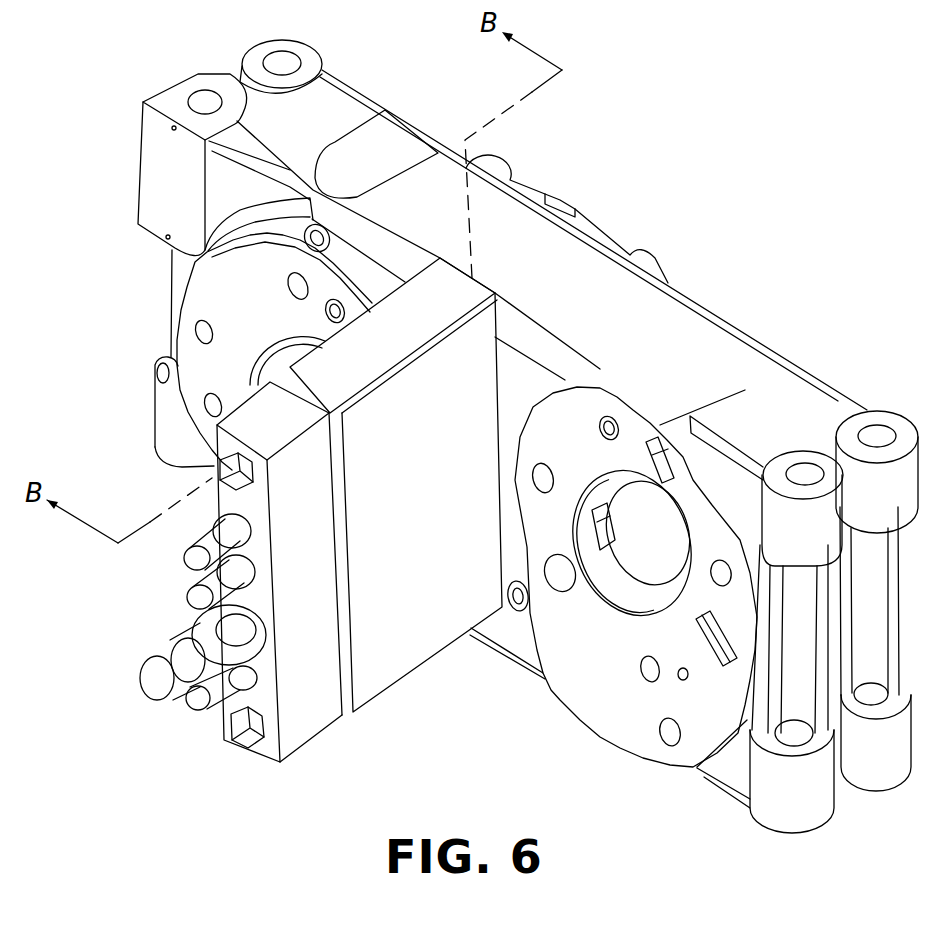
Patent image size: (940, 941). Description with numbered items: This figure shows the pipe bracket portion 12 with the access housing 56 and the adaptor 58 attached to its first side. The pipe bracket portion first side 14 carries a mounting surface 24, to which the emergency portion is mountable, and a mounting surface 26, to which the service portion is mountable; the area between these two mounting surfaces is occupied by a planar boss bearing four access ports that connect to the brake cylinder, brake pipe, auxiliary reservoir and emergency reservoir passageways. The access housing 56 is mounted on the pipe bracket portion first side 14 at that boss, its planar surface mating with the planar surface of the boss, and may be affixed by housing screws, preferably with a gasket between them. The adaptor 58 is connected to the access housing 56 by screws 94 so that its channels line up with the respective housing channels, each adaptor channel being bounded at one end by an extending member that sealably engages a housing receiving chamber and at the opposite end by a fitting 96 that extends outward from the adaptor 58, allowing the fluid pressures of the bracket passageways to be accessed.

The pipe bracket portion 12 is at (668, 322).
The pipe bracket portion first side 14 is at (148, 190).
The mounting surface 24 is at (200, 373).
The mounting surface 26 is at (620, 712).
The access housing 56 is at (407, 647).
The adaptor 58 is at (300, 735).
The screws 94 is at (218, 472).
The fitting 96 is at (227, 713).